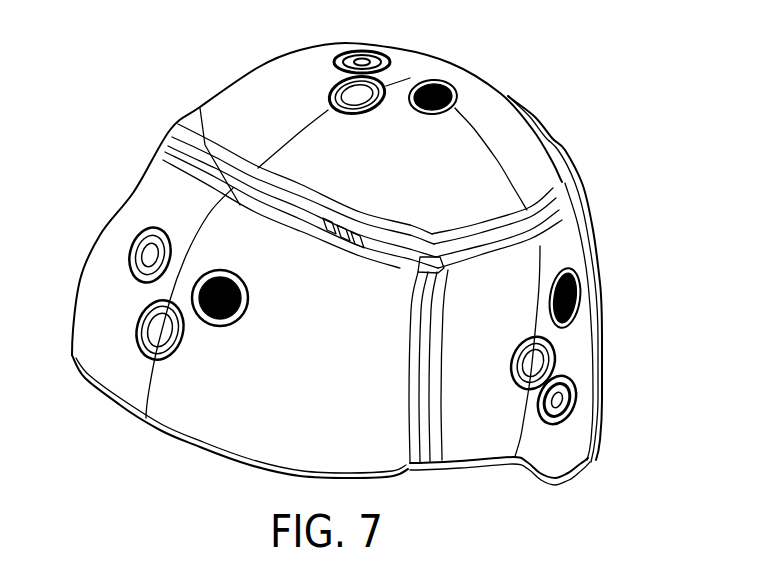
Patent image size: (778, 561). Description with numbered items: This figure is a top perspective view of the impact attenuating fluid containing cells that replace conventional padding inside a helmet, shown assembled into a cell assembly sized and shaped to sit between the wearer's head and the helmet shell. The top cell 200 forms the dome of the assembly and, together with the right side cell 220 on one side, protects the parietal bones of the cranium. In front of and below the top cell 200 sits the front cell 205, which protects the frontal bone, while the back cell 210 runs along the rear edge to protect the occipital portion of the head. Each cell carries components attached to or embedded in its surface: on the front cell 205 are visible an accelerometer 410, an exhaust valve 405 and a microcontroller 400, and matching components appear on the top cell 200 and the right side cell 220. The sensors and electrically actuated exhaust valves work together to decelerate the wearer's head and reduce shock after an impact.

The top cell 200 is at (387, 166).
The front cell 205 is at (297, 376).
The back cell 210 is at (567, 188).
The right side cell 220 is at (517, 308).
The microcontroller 400 is at (216, 318).
The exhaust valve 405 is at (157, 333).
The accelerometer 410 is at (140, 250).